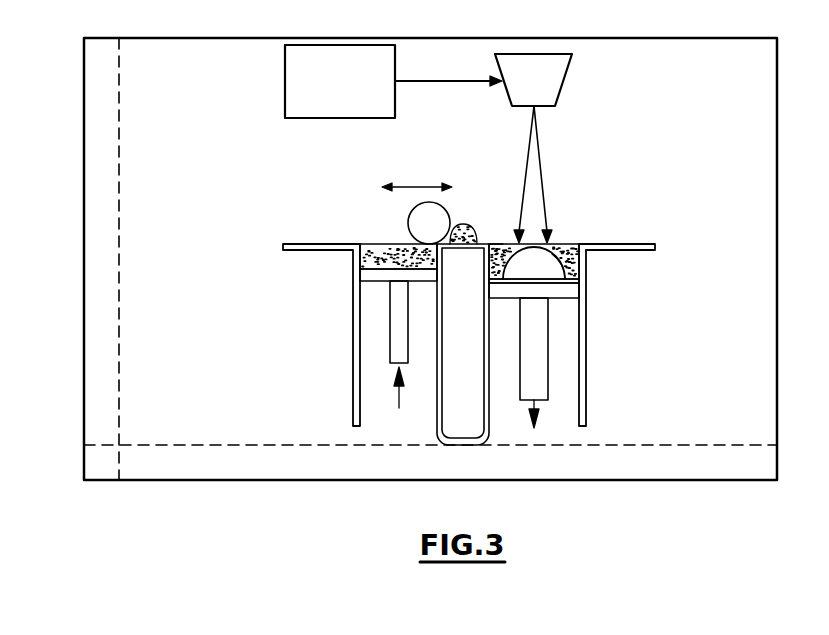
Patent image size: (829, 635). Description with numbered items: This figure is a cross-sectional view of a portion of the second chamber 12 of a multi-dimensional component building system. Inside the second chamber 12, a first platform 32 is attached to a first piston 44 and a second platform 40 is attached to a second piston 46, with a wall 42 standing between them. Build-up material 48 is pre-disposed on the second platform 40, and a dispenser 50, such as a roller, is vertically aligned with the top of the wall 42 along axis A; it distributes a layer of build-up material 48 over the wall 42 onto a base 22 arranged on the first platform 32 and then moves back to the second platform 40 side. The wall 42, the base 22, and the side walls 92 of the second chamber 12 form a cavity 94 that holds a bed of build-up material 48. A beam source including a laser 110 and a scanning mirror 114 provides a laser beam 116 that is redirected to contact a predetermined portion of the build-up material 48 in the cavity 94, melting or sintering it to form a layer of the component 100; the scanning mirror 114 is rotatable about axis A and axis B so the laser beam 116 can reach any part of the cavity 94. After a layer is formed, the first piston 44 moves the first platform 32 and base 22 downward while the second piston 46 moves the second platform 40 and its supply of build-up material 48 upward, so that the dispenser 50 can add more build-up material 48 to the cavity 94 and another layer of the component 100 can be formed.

The second chamber 12 is at (84, 175).
The base 22 is at (560, 283).
The first platform 32 is at (586, 320).
The second platform 40 is at (372, 275).
The wall 42 is at (458, 425).
The first piston 44 is at (390, 338).
The second piston 46 is at (548, 365).
The build-up material 48 is at (380, 256).
The dispenser 50 is at (414, 222).
The side walls 92 is at (598, 250).
The cavity 94 is at (493, 241).
The component 100 is at (576, 262).
The laser 110 is at (285, 97).
The scanning mirror 114 is at (565, 78).
The laser beam 116 is at (410, 82).
The axis A is at (119, 313).
The axis B is at (707, 445).